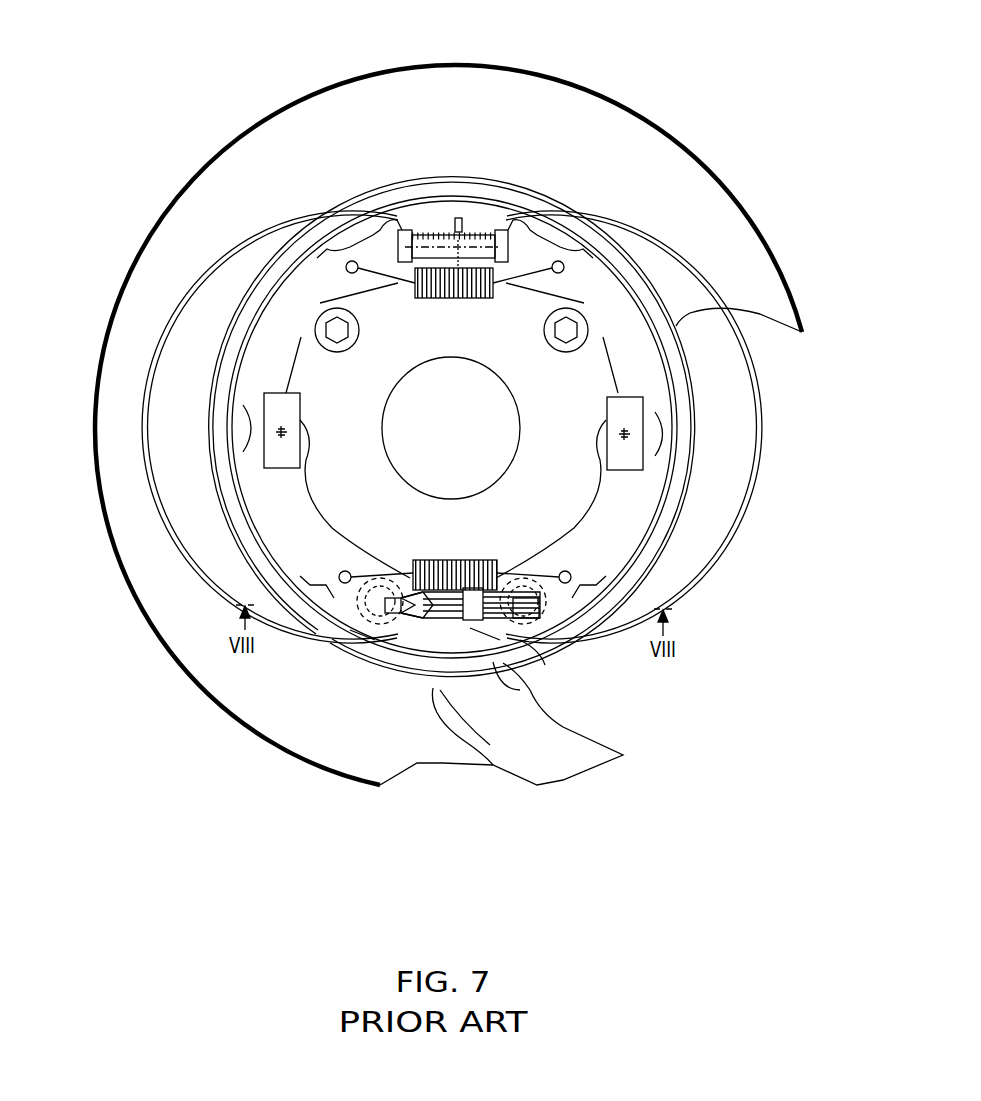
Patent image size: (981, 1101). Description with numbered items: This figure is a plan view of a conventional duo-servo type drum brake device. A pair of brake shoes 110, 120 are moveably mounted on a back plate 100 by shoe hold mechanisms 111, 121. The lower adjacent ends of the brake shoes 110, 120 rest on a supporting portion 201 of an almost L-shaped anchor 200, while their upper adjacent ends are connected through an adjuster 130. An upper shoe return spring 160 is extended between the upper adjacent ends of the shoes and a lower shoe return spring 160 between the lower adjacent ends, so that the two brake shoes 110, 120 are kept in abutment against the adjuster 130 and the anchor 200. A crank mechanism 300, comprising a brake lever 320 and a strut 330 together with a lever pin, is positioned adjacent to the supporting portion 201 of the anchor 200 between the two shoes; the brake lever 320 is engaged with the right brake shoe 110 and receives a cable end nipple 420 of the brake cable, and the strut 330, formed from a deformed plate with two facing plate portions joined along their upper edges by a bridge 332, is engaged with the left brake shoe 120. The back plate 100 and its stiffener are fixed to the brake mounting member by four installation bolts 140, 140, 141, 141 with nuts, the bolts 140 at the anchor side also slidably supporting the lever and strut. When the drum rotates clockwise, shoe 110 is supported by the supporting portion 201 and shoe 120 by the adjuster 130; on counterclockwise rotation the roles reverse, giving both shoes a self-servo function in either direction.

The back plate 100 is at (738, 251).
The brake shoe 110 is at (620, 512).
The shoe hold mechanism 111 is at (643, 410).
The brake shoe 120 is at (273, 512).
The shoe hold mechanism 121 is at (265, 406).
The adjuster 130 is at (474, 228).
The installation bolt 140 is at (387, 570).
The installation bolt 141 is at (338, 328).
The shoe return spring 160 is at (446, 300).
The anchor 200 is at (427, 638).
The supporting portion 201 is at (398, 648).
The crank mechanism 300 is at (533, 670).
The brake lever 320 is at (540, 645).
The strut 330 is at (373, 637).
The bridge 332 is at (481, 630).
The cable end nipple 420 is at (490, 760).